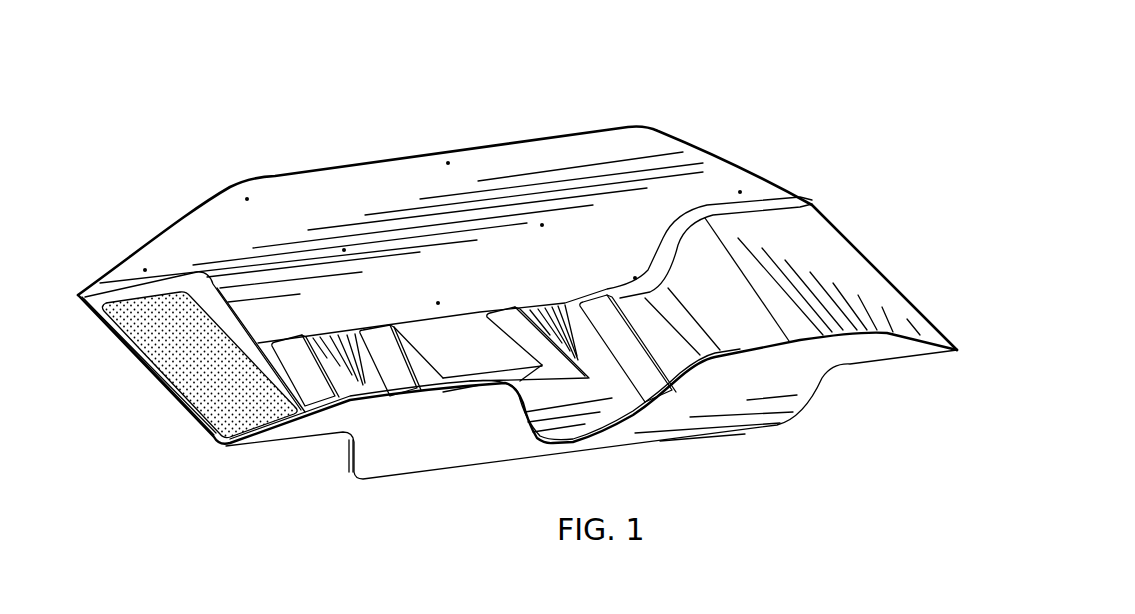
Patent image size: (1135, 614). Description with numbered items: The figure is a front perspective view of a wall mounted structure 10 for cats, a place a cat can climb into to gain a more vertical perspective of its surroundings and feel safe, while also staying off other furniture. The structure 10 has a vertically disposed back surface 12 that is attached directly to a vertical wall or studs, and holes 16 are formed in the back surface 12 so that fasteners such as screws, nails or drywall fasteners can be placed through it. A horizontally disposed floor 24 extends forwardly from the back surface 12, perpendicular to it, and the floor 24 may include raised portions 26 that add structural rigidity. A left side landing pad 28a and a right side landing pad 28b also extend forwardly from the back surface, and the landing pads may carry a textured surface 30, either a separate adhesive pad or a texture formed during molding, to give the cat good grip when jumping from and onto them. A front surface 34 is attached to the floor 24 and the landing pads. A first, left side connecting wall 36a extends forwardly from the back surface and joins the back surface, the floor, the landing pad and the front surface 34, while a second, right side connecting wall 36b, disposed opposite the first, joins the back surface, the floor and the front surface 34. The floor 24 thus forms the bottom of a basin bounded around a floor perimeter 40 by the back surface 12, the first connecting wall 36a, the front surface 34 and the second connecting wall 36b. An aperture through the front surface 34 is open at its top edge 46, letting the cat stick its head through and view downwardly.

The wall mounted structure 10 is at (813, 60).
The back surface 12 is at (524, 155).
The holes 16 is at (645, 150).
The floor 24 is at (611, 383).
The raised portions 26 is at (332, 385).
The left side landing pad 28a is at (152, 365).
The right side landing pad 28b is at (818, 228).
The textured surface 30 is at (212, 382).
The front surface 34 is at (777, 372).
The first connecting wall 36a is at (342, 453).
The second connecting wall 36b is at (733, 315).
The floor perimeter 40 is at (469, 312).
The top edge 46 is at (447, 393).